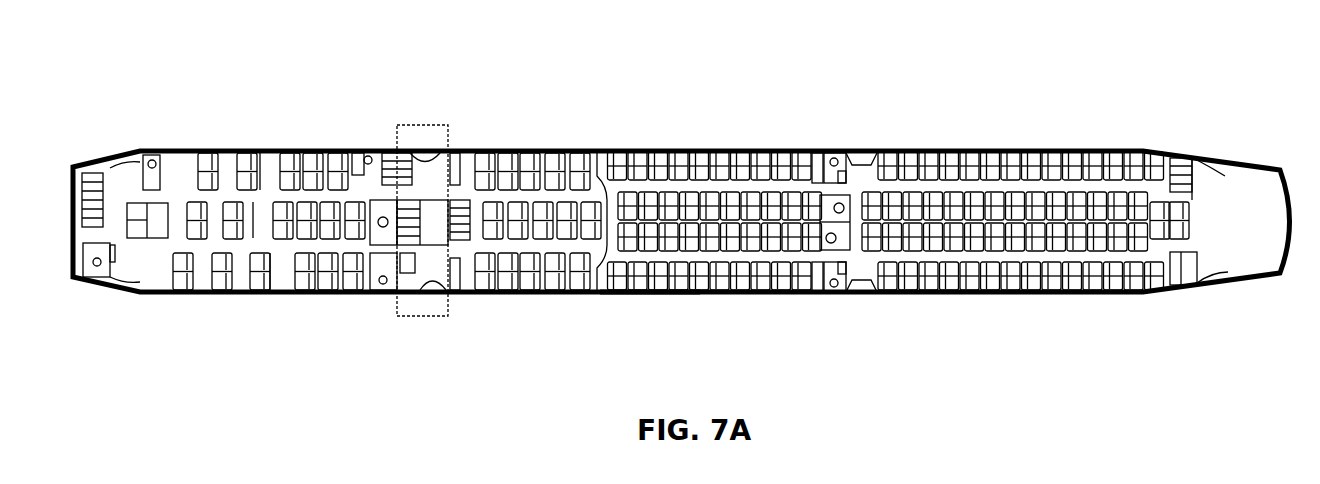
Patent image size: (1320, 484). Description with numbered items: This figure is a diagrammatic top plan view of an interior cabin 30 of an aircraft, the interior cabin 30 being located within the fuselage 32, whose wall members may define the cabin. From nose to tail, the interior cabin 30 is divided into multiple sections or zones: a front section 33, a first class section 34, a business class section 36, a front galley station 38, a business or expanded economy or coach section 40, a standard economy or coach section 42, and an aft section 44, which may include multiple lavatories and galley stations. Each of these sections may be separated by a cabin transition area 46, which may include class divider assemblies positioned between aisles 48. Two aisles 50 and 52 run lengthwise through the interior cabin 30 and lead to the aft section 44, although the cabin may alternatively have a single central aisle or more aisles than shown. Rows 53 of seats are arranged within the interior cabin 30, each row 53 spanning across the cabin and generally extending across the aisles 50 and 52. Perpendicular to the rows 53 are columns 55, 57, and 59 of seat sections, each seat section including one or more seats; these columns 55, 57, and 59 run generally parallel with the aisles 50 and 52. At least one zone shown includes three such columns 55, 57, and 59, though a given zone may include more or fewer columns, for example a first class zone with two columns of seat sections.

The interior cabin 30 is at (213, 50).
The fuselage 32 is at (546, 105).
The front section 33 is at (131, 306).
The first class section 34 is at (228, 293).
The business class section 36 is at (303, 151).
The front galley station 38 is at (422, 308).
The expanded economy or coach section 40 is at (522, 293).
The standard economy or coach section 42 is at (653, 150).
The aft section 44 is at (1220, 176).
The cabin transition area 46 is at (150, 152).
The aisles 48 is at (410, 205).
The aisle 50 is at (1013, 185).
The aisle 52 is at (1032, 255).
The rows of seats 53 is at (632, 297).
The column of seat sections 55 is at (612, 272).
The column of seat sections 57 is at (623, 212).
The column of seat sections 59 is at (612, 158).